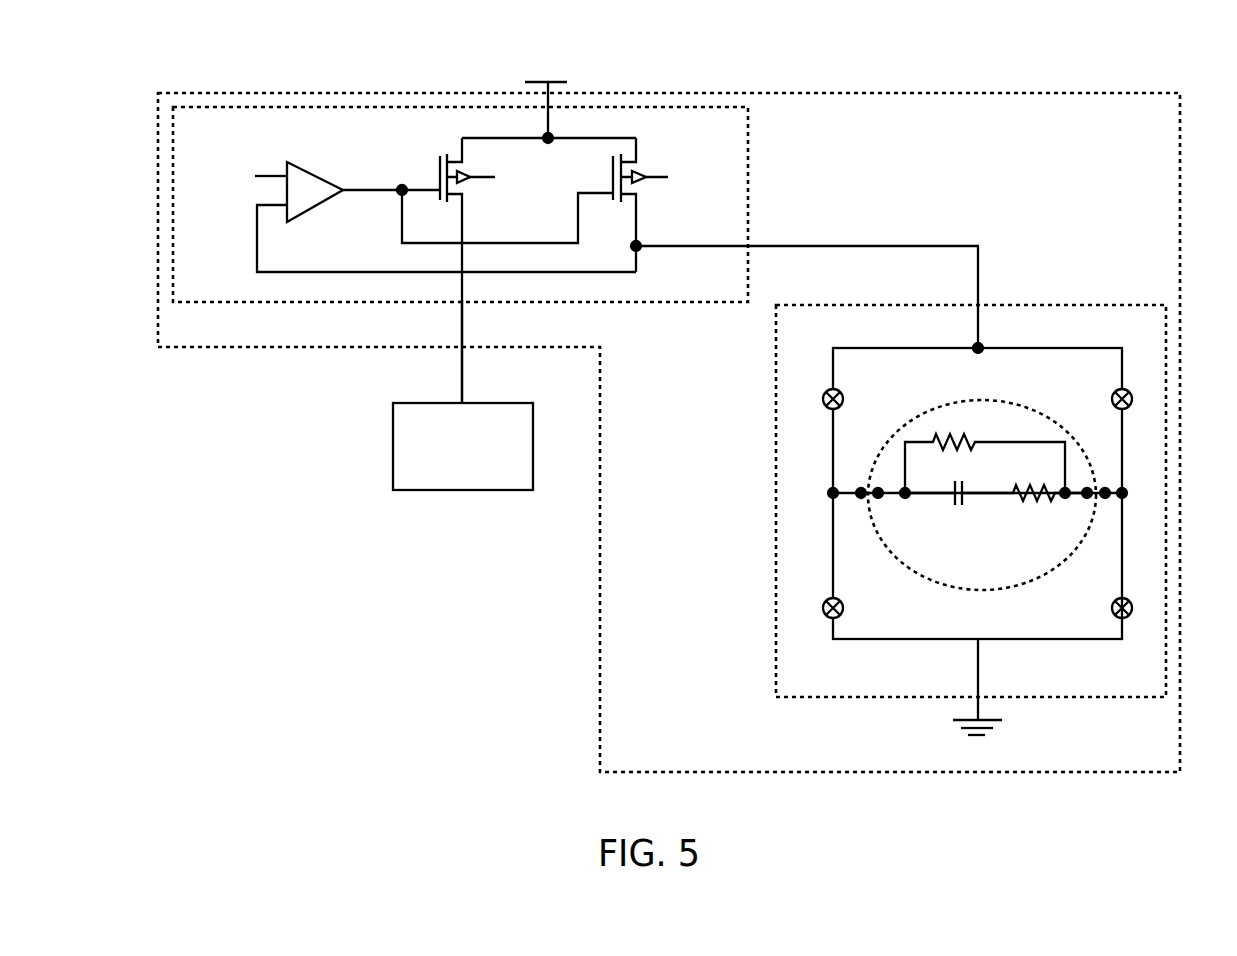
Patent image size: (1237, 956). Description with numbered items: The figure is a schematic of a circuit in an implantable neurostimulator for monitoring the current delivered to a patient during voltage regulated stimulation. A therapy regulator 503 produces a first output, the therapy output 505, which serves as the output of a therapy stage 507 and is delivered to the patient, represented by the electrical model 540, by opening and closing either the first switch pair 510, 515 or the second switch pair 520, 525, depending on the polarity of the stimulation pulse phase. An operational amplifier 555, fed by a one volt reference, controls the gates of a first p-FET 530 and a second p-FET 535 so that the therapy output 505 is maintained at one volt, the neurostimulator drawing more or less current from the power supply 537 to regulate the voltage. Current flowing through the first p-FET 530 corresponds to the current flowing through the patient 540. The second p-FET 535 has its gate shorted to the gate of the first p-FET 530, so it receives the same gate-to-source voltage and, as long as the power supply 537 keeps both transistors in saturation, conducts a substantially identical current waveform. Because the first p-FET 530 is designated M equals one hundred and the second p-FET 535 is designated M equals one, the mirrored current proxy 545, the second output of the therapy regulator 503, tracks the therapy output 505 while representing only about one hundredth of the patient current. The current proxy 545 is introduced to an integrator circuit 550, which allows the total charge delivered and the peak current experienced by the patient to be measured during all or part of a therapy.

The therapy regulator 503 is at (748, 173).
The therapy output 505 is at (913, 243).
The therapy stage 507 is at (1070, 303).
The switch 510 is at (823, 399).
The switch 515 is at (975, 93).
The switch 520 is at (1133, 399).
The switch 525 is at (823, 608).
The first p-FET 530 is at (648, 178).
The second p-FET 535 is at (440, 180).
The power supply 537 is at (557, 80).
The electrical model of the patient 540 is at (1062, 568).
The current proxy 545 is at (463, 328).
The integrator circuit 550 is at (393, 450).
The operational amplifier 555 is at (326, 177).